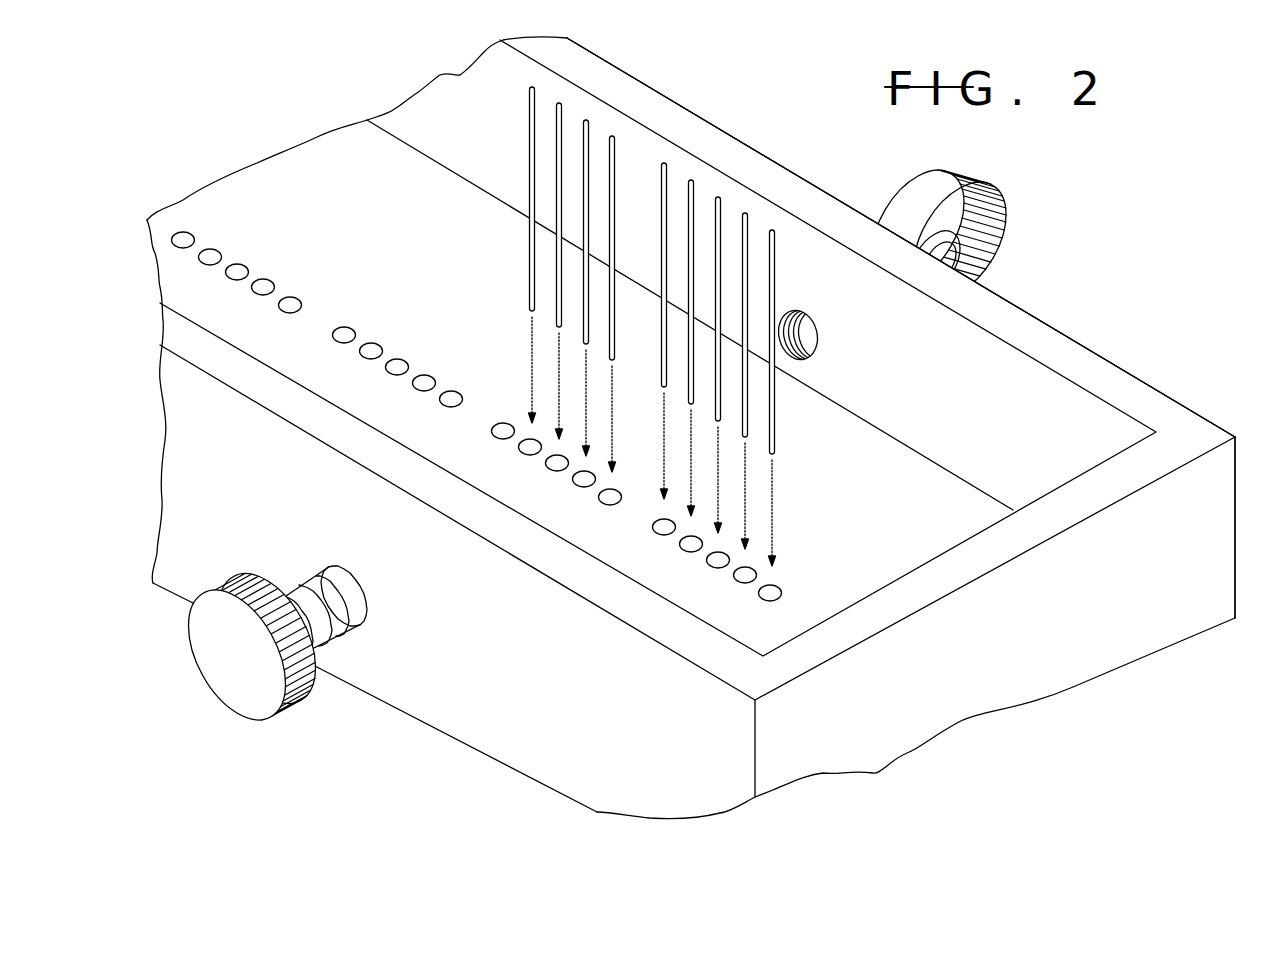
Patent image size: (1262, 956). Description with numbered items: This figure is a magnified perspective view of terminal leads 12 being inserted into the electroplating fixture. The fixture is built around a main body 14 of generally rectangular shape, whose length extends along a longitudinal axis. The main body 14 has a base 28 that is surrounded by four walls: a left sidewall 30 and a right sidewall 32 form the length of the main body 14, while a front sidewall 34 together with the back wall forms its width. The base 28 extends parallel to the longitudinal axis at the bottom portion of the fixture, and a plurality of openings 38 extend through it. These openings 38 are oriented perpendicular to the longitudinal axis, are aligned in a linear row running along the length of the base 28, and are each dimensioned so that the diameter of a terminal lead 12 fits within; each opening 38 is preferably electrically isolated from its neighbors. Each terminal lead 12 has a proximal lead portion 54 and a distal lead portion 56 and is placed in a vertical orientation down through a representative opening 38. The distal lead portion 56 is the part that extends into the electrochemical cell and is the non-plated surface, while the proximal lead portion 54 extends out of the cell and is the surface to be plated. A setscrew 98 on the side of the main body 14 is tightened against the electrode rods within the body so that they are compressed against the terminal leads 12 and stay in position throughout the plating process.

The terminal leads 12 is at (614, 156).
The main body 14 is at (1118, 352).
The base 28 is at (300, 182).
The left sidewall 30 is at (783, 167).
The right sidewall 32 is at (517, 672).
The front sidewall 34 is at (1150, 613).
The openings 38 is at (299, 298).
The proximal lead portion 54 is at (776, 435).
The distal lead portion 56 is at (777, 268).
The setscrews 98 is at (347, 633).